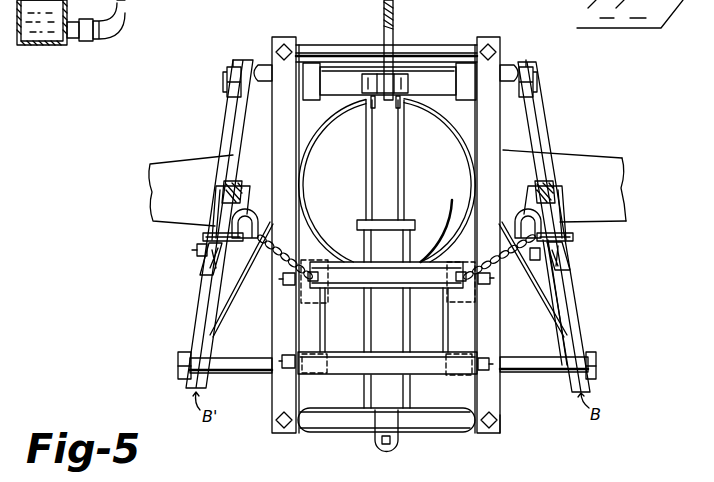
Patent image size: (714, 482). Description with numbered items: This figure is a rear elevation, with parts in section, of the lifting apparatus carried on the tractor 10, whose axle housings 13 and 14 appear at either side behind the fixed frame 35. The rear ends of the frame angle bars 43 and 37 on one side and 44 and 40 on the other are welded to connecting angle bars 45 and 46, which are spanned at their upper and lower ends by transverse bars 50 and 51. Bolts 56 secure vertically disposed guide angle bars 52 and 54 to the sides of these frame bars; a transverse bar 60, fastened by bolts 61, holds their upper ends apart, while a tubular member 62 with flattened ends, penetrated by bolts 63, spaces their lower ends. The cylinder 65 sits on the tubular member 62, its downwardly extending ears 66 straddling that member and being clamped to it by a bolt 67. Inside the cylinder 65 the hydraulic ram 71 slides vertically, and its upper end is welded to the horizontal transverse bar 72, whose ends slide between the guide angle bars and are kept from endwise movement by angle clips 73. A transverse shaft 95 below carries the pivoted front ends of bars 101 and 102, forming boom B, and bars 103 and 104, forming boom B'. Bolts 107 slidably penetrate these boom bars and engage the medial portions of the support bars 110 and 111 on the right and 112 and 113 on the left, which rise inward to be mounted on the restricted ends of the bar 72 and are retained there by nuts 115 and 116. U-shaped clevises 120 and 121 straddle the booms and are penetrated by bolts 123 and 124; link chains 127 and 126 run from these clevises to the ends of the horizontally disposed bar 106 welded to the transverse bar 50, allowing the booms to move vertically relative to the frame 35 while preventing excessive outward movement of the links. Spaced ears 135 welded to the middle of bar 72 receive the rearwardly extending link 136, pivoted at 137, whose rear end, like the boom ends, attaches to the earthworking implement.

The tractor 10 is at (583, 148).
The axle housing 13 is at (192, 162).
The axle housing 14 is at (606, 164).
The frame 35 is at (510, 431).
The angle bar 37 is at (319, 260).
The angle bar 40 is at (451, 260).
The angle bar 43 is at (312, 380).
The angle bar 44 is at (463, 384).
The connecting angle bar 45 is at (325, 352).
The connecting angle bar 46 is at (446, 337).
The transverse bar 50 is at (333, 290).
The transverse bar 51 is at (387, 366).
The angle bar 52 is at (272, 396).
The angle bar 54 is at (500, 404).
The bolt 56 is at (282, 286).
The transverse bar 60 is at (412, 48).
The bolt 61 is at (288, 44).
The tubular member 62 is at (432, 434).
The bolt 63 is at (276, 424).
The cylinder 65 is at (424, 378).
The ear 66 is at (375, 424).
The bolt 67 is at (388, 446).
The hydraulic ram 71 is at (405, 160).
The transverse bar 72 is at (333, 72).
The angle clip 73 is at (308, 90).
The transverse shaft 95 is at (521, 373).
The bar 101 is at (552, 186).
The bar 102 is at (540, 184).
The bar 103 is at (236, 195).
The bar 104 is at (224, 188).
The horizontally disposed bar 106 is at (348, 274).
The bolt 107 is at (197, 250).
The support bar 110 is at (585, 316).
The support bar 111 is at (548, 322).
The support bar 112 is at (213, 355).
The support bar 113 is at (200, 284).
The nut 115 is at (547, 70).
The nut 116 is at (237, 68).
The U-shaped clevis 120 is at (203, 239).
The U-shaped clevis 121 is at (574, 241).
The bolt 123 is at (210, 266).
The bolt 124 is at (567, 264).
The link chain 126 is at (498, 270).
The link chain 127 is at (283, 278).
The ear 135 is at (373, 108).
The link 136 is at (393, 13).
The pivot 137 is at (408, 86).